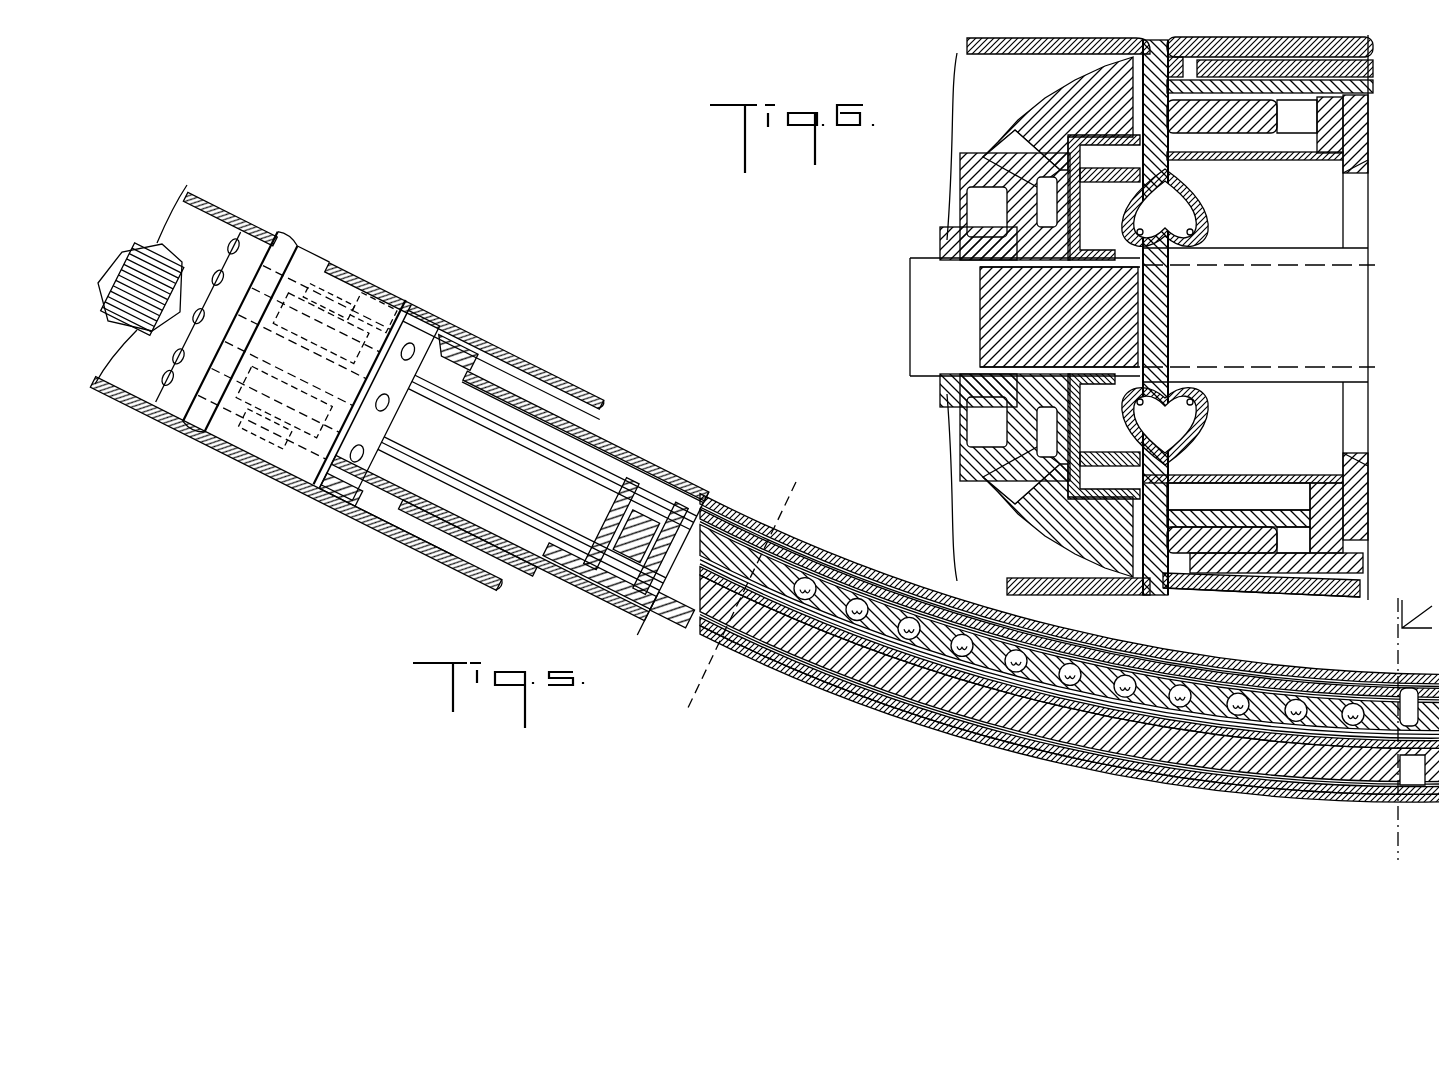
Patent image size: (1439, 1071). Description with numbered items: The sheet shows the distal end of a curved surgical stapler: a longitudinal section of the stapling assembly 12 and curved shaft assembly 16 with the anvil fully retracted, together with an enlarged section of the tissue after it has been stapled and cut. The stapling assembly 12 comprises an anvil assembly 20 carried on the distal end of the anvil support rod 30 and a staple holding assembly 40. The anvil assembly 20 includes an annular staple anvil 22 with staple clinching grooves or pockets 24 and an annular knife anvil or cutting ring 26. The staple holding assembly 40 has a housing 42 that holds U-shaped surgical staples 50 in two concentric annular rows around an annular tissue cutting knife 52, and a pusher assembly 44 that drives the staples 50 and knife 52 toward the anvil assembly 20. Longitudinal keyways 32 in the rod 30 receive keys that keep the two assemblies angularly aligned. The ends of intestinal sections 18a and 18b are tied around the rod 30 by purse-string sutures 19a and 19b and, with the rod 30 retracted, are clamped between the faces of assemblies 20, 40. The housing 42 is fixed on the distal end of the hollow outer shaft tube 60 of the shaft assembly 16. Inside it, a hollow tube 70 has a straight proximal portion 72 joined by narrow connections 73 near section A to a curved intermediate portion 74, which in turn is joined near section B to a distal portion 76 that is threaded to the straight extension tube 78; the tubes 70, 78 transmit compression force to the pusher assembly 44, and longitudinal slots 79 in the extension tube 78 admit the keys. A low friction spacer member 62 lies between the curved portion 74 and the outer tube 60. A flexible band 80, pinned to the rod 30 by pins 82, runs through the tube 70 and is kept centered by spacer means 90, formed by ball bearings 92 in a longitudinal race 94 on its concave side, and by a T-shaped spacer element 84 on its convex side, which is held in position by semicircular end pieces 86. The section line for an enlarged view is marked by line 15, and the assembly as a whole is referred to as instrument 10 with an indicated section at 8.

In FIG. 5, the section line 8 is at (733, 680).
In FIG. 5, the assembly 10 is at (1420, 624).
In FIG. 5, the stapling assembly 12 is at (330, 220).
In FIG. 5, the section line 15 is at (753, 597).
In FIG. 5, the shaft assembly 16 is at (911, 748).
In FIG. 5, the intestinal section 18a is at (540, 358).
In FIG. 6, the intestinal section 18a is at (1282, 592).
In FIG. 5, the intestinal section 18b is at (218, 214).
In FIG. 6, the intestinal section 18b is at (1050, 590).
In FIG. 6, the purse-string suture 19a is at (1222, 408).
In FIG. 6, the purse-string suture 19b is at (1158, 398).
In FIG. 5, the anvil assembly 20 is at (176, 425).
In FIG. 6, the anvil assembly 20 is at (1045, 530).
In FIG. 6, the annular staple anvil 22 is at (1140, 80).
In FIG. 6, the staple clinching grooves or pockets 24 is at (1165, 600).
In FIG. 6, the annular knife anvil or cutting ring 26 is at (1105, 228).
In FIG. 5, the anvil support rod 30 is at (604, 488).
In FIG. 6, the anvil support rod 30 is at (1290, 384).
In FIG. 6, the longitudinal keyways 32 is at (1366, 262).
In FIG. 5, the staple holding assembly 40 is at (275, 474).
In FIG. 6, the staple holding assembly 40 is at (1336, 598).
In FIG. 5, the housing 42 is at (340, 487).
In FIG. 6, the housing 42 is at (1358, 566).
In FIG. 5, the pusher assembly 44 is at (458, 382).
In FIG. 6, the pusher assembly 44 is at (1368, 482).
In FIG. 5, the surgical staples 50 is at (352, 268).
In FIG. 6, the surgical staples 50 is at (1185, 508).
In FIG. 5, the annular tissue cutting knife 52 is at (382, 292).
In FIG. 6, the annular tissue cutting knife 52 is at (1262, 475).
In FIG. 5, the outer shaft tube 60 is at (872, 698).
In FIG. 5, the spacer member 62 is at (815, 556).
In FIG. 5, the hollow tube 70 is at (1180, 780).
In FIG. 5, the straight proximal portion 72 is at (1424, 854).
In FIG. 5, the connections 73 is at (1418, 729).
In FIG. 5, the intermediate portion 74 is at (1060, 730).
In FIG. 5, the distal portion 76 is at (692, 620).
In FIG. 5, the extension tube 78 is at (592, 548).
In FIG. 5, the longitudinal slots 79 is at (520, 412).
In FIG. 5, the flexible band 80 is at (1265, 728).
In FIG. 5, the pins 82 is at (722, 522).
In FIG. 5, the spacer element 84 is at (998, 722).
In FIG. 5, the semicircular end pieces 86 is at (760, 648).
In FIG. 5, the spacer means 90 is at (888, 578).
In FIG. 5, the ball bearings 92 is at (950, 610).
In FIG. 5, the longitudinal race 94 is at (1008, 628).